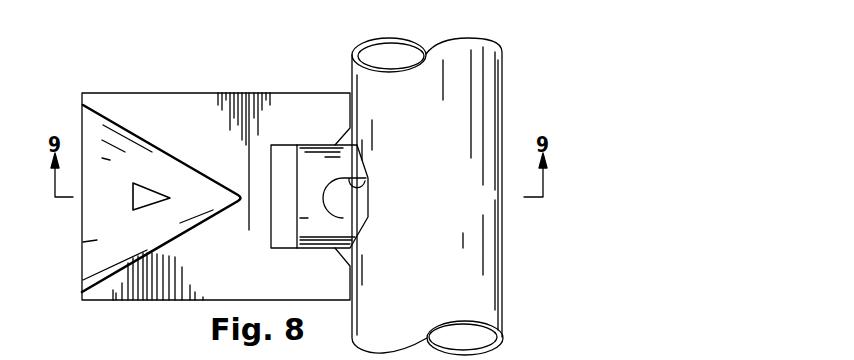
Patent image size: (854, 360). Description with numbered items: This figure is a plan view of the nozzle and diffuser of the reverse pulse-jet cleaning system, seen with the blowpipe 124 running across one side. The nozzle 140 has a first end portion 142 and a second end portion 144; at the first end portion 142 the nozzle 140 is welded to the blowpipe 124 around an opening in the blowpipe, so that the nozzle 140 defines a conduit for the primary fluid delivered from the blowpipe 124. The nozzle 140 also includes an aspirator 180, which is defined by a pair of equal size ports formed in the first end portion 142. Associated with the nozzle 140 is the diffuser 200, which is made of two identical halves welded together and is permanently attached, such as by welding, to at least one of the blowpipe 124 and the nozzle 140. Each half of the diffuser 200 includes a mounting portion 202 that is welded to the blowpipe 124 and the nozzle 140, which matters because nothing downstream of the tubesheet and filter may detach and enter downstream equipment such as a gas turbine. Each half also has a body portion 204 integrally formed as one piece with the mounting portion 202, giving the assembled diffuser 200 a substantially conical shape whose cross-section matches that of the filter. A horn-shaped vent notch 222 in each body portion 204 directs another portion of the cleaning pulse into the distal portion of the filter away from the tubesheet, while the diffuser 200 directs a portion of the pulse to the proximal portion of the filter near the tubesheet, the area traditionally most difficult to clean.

The diffuser 200 is at (151, 77).
The mounting portion 202 is at (196, 113).
The body portion 204 is at (112, 243).
The vent notch 222 is at (143, 194).
The nozzle 140 is at (325, 216).
The first end portion 142 is at (355, 168).
The second end portion 144 is at (289, 163).
The aspirator 180 is at (348, 180).
The blowpipe 124 is at (478, 98).